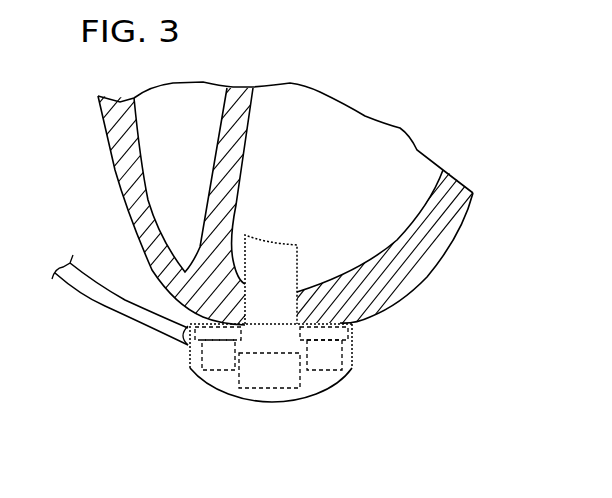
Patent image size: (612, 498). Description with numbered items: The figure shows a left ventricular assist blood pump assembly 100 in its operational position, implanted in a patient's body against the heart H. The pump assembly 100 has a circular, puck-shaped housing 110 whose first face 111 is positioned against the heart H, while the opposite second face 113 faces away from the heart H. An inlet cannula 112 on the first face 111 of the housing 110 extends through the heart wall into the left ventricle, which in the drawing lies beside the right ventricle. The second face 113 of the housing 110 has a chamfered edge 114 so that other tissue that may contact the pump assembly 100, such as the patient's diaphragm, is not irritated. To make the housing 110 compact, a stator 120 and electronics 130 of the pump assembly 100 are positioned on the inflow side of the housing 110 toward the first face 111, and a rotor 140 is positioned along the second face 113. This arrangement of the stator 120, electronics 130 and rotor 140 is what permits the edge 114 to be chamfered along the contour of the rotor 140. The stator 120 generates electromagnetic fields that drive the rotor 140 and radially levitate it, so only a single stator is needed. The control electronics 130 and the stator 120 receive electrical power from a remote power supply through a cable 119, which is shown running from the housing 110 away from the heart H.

The heart H is at (306, 249).
The left ventricular assist blood pump assembly 100 is at (270, 346).
The housing 110 is at (206, 369).
The first face 111 is at (330, 323).
The inlet cannula 112 is at (298, 258).
The second face 113 is at (212, 390).
The chamfered edge 114 is at (352, 366).
The cable 119 is at (90, 299).
The stator 120 is at (196, 353).
The electronics 130 is at (188, 332).
The rotor 140 is at (300, 383).